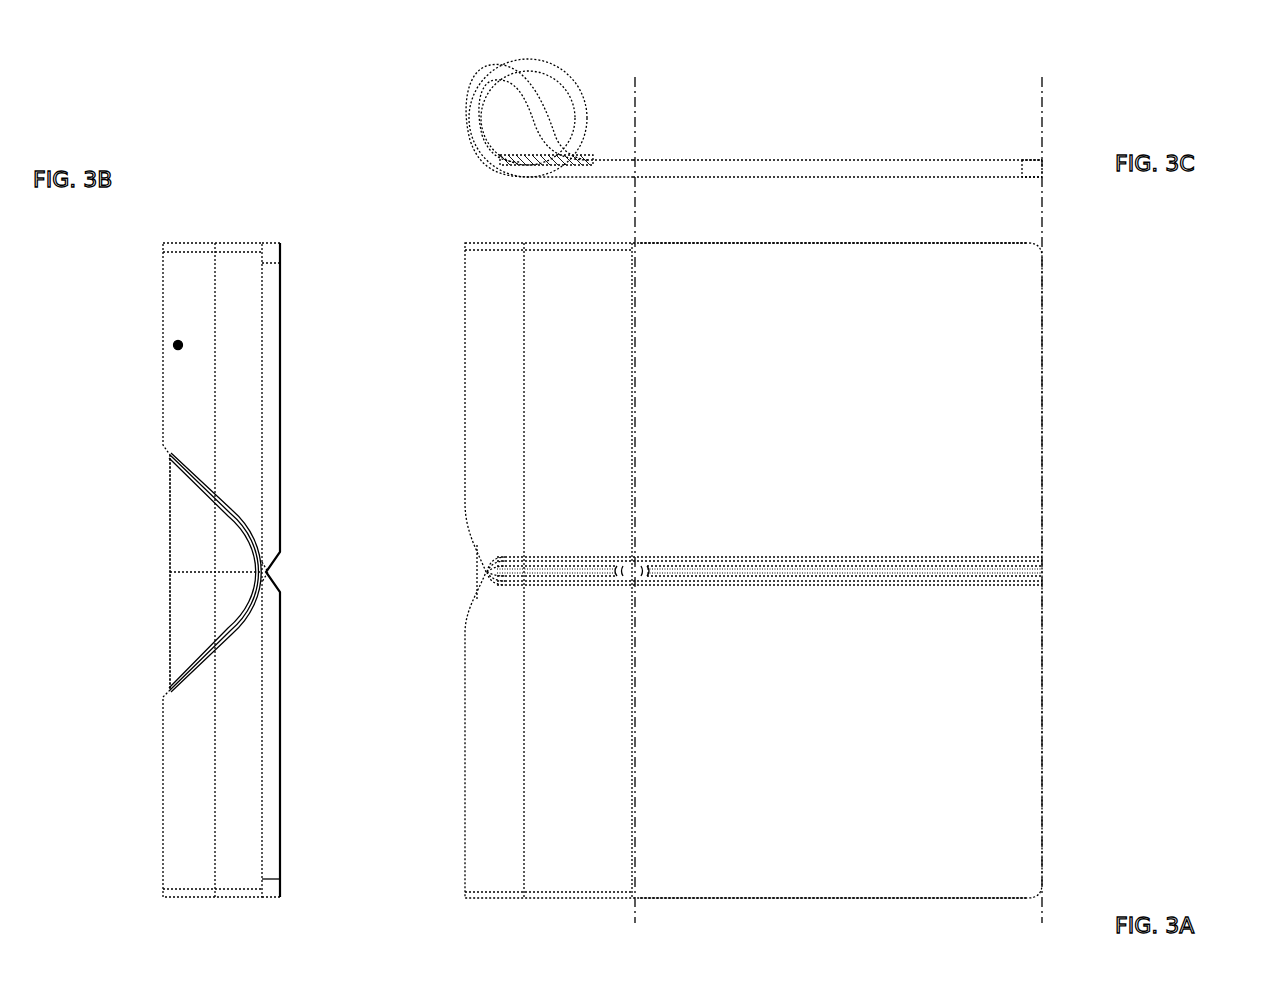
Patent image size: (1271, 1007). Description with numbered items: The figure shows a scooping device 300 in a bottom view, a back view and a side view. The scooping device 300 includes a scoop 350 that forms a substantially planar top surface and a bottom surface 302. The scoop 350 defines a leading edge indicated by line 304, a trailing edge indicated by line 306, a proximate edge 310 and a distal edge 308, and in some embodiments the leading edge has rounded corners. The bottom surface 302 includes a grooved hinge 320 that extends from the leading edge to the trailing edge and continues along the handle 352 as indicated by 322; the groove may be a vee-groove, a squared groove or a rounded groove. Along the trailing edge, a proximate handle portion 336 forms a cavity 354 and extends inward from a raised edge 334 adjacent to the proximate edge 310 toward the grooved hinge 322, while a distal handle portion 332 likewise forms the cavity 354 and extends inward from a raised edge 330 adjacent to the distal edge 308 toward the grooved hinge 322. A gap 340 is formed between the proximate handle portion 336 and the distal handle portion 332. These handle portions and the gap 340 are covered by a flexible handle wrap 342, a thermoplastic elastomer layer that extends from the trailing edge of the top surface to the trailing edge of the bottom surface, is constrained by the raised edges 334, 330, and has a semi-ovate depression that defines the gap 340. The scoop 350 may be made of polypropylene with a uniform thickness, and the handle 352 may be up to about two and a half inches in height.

In FIG. 3B, the scooping device 300 is at (255, 76).
In FIG. 3A, the bottom surface 302 is at (776, 446).
In FIG. 3A, the leading edge line 304 is at (1038, 212).
In FIG. 3A, the trailing edge line 306 is at (640, 222).
In FIG. 3A, the distal edge 308 is at (838, 892).
In FIG. 3A, the proximate edge 310 is at (838, 254).
In FIG. 3A, the grooved hinge 320 is at (1040, 570).
In FIG. 3A, the grooved hinge continuation 322 is at (485, 571).
In FIG. 3B, the raised edge 330 is at (163, 897).
In FIG. 3A, the raised edge 330 is at (538, 886).
In FIG. 3A, the distal handle portion 332 is at (430, 630).
In FIG. 3B, the raised edge 334 is at (163, 252).
In FIG. 3A, the raised edge 334 is at (538, 258).
In FIG. 3A, the proximate handle portion 336 is at (430, 247).
In FIG. 3B, the gap 340 is at (127, 452).
In FIG. 3B, the flexible handle wrap 342 is at (175, 345).
In FIG. 3C, the scoop 350 is at (633, 60).
In FIG. 3C, the handle 352 is at (457, 60).
In FIG. 3C, the cavity 354 is at (509, 128).